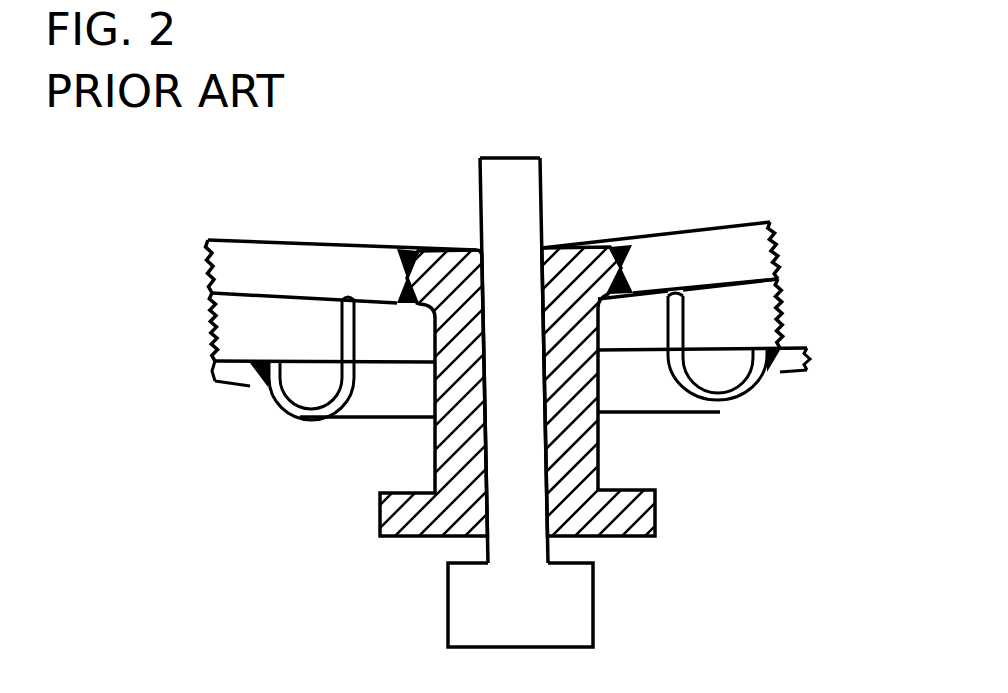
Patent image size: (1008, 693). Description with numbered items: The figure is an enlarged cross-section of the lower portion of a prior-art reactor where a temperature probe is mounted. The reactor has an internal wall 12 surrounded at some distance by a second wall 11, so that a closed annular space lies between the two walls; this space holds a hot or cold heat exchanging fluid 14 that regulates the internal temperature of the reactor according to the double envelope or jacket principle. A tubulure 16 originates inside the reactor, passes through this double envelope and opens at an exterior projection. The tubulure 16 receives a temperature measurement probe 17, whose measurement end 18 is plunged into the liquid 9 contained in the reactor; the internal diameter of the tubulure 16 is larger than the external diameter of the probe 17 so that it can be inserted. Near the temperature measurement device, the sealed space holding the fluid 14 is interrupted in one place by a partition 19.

The liquid 9 is at (763, 165).
The second wall 11 is at (235, 370).
The internal wall 12 is at (232, 260).
The heat exchanging fluid 14 is at (223, 314).
The tubulure 16 is at (580, 468).
The temperature measurement probe 17 is at (507, 420).
The measurement end 18 is at (517, 155).
The partition 19 is at (340, 335).